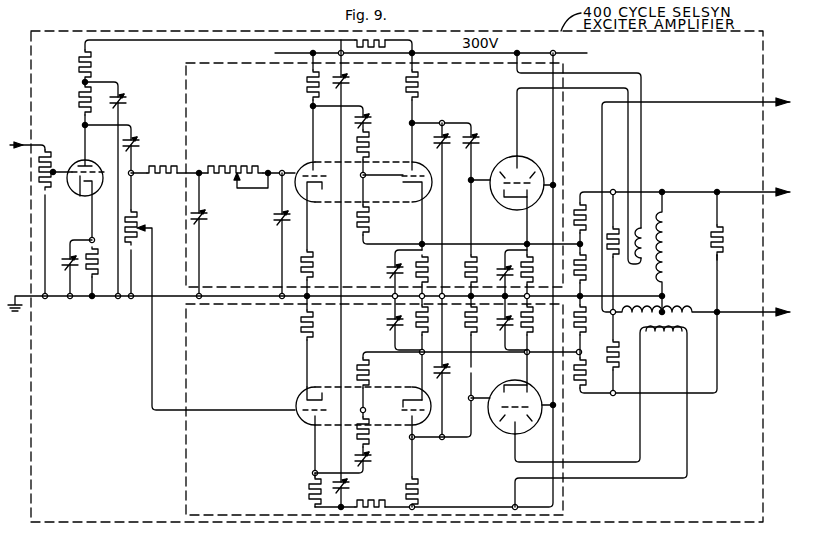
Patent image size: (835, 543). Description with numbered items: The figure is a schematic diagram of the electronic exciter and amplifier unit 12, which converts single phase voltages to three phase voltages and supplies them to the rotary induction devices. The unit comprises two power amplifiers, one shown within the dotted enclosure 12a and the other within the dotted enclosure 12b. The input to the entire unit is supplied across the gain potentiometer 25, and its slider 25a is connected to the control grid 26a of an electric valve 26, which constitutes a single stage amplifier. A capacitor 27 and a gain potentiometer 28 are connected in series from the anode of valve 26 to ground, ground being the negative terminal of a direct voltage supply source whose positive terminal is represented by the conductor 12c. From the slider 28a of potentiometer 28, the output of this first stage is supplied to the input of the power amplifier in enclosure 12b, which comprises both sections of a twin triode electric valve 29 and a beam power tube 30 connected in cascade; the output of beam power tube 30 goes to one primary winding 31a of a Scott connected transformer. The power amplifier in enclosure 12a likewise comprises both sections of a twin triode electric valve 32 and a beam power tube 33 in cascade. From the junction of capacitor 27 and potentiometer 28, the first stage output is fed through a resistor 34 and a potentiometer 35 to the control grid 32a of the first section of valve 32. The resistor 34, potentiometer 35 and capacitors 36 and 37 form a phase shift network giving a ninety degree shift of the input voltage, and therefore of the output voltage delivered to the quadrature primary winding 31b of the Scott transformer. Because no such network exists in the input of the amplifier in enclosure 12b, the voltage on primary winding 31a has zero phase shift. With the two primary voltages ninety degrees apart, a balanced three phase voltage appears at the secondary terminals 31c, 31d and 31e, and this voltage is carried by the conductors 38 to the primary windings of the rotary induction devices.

The electronic exciter and amplifier unit 12 is at (141, 31).
The dotted enclosure 12a is at (186, 80).
The dotted enclosure 12b is at (186, 455).
The conductor 12c is at (279, 54).
The gain potentiometer 25 is at (35, 169).
The slider 25a is at (57, 224).
The electric valve 26 is at (83, 166).
The control grid 26a is at (93, 167).
The capacitor 27 is at (134, 139).
The gain potentiometer 28 is at (134, 207).
The slider 28a is at (146, 227).
The twin triode electric valve 29 is at (306, 419).
The beam power tube 30 is at (503, 383).
The primary winding 31a is at (662, 338).
The quadrature primary winding 31b is at (641, 225).
The secondary terminal 31c is at (612, 314).
The secondary terminal 31d is at (664, 192).
The secondary terminal 31e is at (719, 313).
The twin triode electric valve 32 is at (329, 162).
The control grid 32a is at (303, 161).
The beam power tube 33 is at (503, 157).
The resistor 34 is at (167, 169).
The potentiometer 35 is at (231, 169).
The capacitor 36 is at (208, 215).
The capacitor 37 is at (276, 218).
The conductors 38 is at (767, 308).